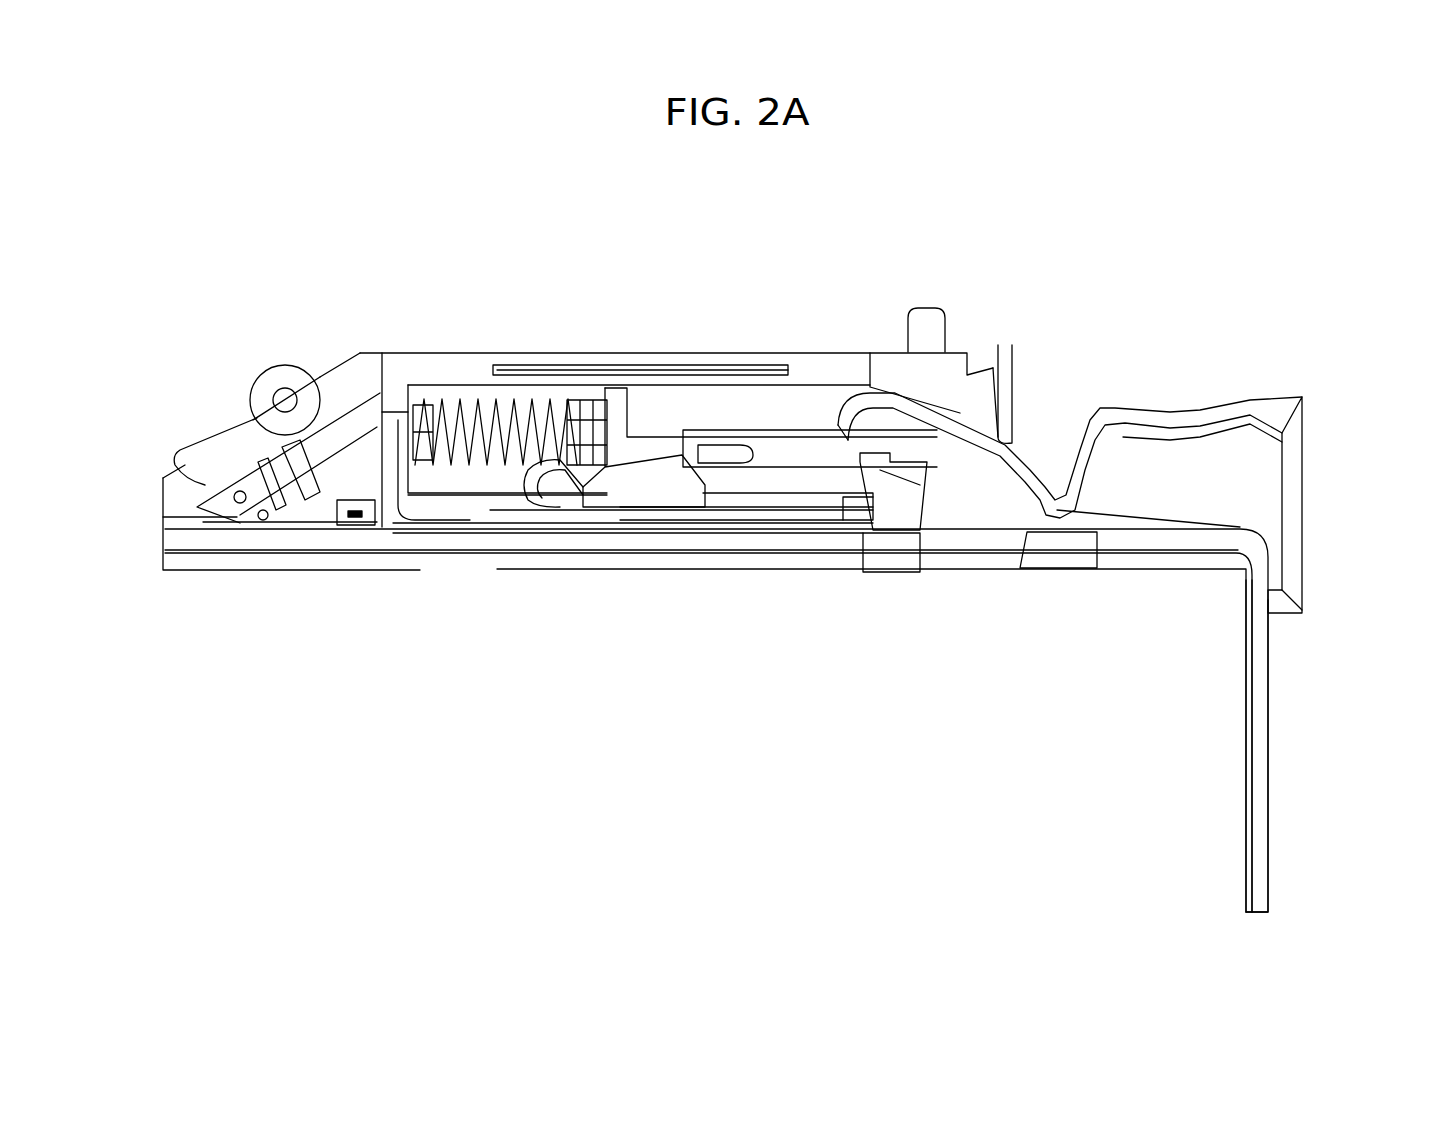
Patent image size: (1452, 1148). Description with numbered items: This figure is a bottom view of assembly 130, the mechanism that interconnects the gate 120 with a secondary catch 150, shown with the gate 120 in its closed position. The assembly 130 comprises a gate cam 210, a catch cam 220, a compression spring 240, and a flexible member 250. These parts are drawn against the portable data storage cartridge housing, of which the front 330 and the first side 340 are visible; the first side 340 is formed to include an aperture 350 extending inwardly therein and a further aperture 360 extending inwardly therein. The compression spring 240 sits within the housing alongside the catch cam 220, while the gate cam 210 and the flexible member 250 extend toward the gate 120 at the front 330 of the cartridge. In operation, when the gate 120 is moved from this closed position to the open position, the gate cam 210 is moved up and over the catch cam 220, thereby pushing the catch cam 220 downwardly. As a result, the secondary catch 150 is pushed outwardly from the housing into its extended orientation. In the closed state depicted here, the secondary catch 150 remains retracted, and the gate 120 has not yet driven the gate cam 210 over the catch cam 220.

The assembly 130 is at (960, 260).
The first side 340 is at (487, 560).
The compression spring 240 is at (455, 415).
The catch cam 220 is at (620, 480).
The gate cam 210 is at (710, 452).
The flexible member 250 is at (765, 490).
The secondary catch 150 is at (905, 492).
The aperture 350 is at (915, 560).
The aperture 360 is at (1070, 560).
The gate 120 is at (1295, 488).
The front 330 is at (1245, 797).